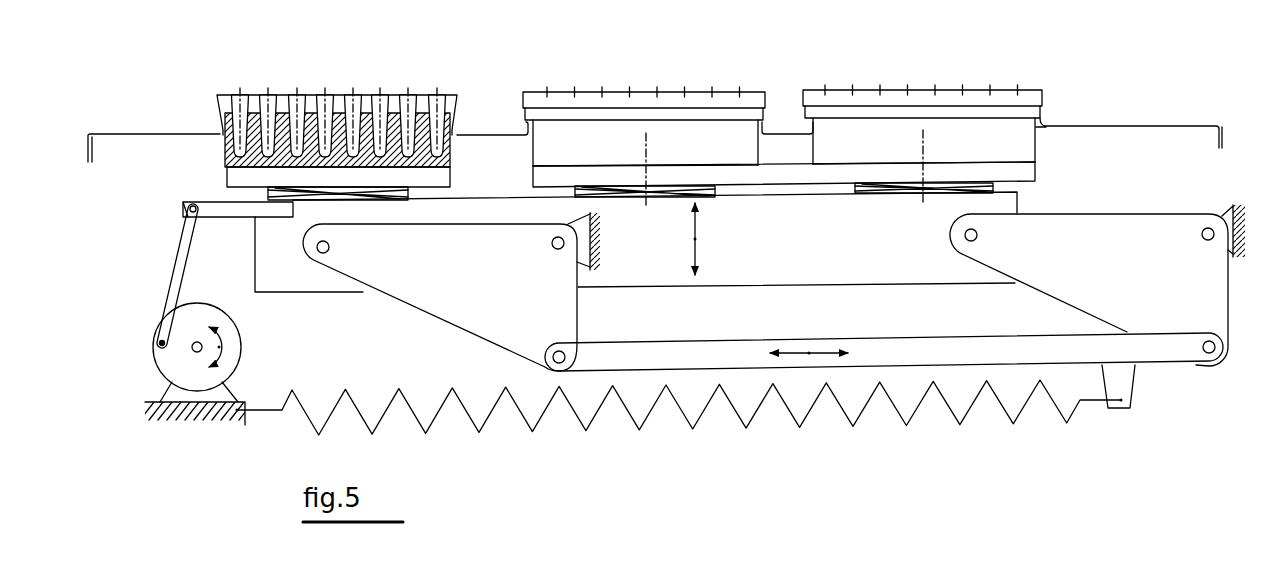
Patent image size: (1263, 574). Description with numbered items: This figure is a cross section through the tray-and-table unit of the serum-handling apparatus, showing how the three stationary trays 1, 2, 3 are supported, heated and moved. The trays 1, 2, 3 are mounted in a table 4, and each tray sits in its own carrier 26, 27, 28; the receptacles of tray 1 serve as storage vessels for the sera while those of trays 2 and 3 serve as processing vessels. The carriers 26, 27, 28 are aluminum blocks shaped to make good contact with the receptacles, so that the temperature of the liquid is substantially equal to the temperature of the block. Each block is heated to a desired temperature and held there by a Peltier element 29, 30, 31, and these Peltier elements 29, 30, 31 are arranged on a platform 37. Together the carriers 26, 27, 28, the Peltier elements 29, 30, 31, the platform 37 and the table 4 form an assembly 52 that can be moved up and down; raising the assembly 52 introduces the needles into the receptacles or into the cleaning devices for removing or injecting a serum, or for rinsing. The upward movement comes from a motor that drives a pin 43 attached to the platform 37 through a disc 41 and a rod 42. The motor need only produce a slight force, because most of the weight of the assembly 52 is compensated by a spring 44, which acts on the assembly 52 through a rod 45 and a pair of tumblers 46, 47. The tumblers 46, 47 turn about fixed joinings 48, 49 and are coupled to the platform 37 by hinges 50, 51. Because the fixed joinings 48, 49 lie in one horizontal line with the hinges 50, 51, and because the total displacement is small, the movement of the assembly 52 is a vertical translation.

The tray 1 is at (289, 94).
The tray 2 is at (590, 91).
The tray 3 is at (866, 89).
The table 4 is at (133, 135).
The carrier 26 is at (349, 160).
The carrier 27 is at (667, 150).
The carrier 28 is at (942, 150).
The Peltier element 29 is at (391, 194).
The Peltier element 30 is at (693, 192).
The Peltier element 31 is at (985, 187).
The platform 37 is at (753, 275).
The disc 41 is at (227, 352).
The rod 42 is at (180, 272).
The pin 43 is at (213, 207).
The spring 44 is at (692, 429).
The rod 45 is at (1148, 348).
The tumbler 46 is at (557, 320).
The tumbler 47 is at (1057, 287).
The fixed joining 48 is at (1200, 236).
The fixed joining 49 is at (551, 243).
The hinge 50 is at (980, 236).
The hinge 51 is at (333, 247).
The assembly 52 is at (1054, 84).